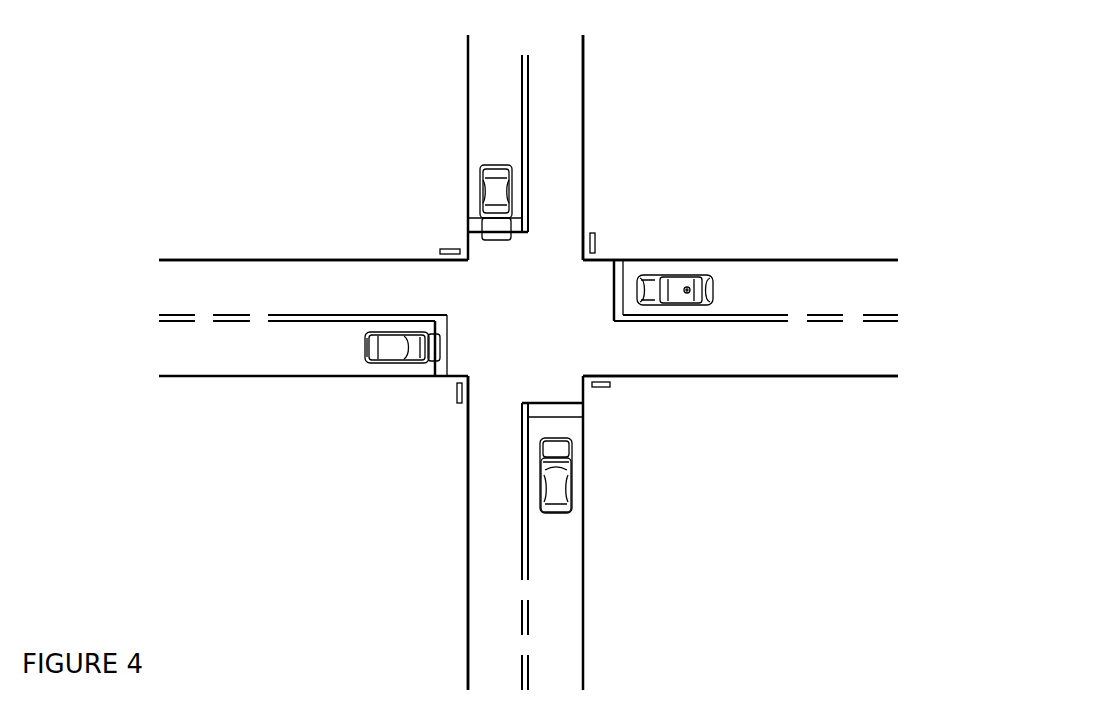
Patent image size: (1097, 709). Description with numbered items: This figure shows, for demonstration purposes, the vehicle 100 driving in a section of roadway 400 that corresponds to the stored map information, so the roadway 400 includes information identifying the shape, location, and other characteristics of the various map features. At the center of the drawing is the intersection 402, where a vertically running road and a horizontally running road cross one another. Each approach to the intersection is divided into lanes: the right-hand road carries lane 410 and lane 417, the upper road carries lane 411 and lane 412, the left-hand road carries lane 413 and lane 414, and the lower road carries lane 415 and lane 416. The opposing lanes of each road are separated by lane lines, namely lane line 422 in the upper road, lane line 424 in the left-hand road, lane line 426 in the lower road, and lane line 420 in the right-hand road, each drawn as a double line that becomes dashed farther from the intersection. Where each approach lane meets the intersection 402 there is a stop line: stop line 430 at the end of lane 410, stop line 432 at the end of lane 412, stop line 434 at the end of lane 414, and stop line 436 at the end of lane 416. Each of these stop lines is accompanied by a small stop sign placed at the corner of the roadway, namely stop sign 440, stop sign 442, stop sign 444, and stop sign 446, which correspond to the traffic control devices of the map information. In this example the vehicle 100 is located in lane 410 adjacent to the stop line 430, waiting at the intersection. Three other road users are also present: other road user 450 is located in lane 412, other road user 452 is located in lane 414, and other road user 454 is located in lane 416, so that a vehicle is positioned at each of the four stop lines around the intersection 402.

The roadway 400 is at (101, 628).
The intersection 402 is at (534, 313).
The lane 410 is at (740, 277).
The lane 411 is at (562, 147).
The lane 413 is at (313, 277).
The lane 415 is at (490, 533).
The lane 417 is at (740, 360).
The lane 412 is at (504, 143).
The lane 414 is at (303, 337).
The lane 416 is at (543, 546).
The lane line 420 is at (748, 312).
The lane line 422 is at (522, 118).
The lane line 424 is at (310, 322).
The lane line 426 is at (530, 533).
The stop line 430 is at (617, 255).
The stop line 432 is at (468, 228).
The stop line 434 is at (440, 378).
The stop line 436 is at (553, 418).
The stop sign 440 is at (593, 232).
The stop sign 442 is at (440, 251).
The stop sign 444 is at (460, 405).
The stop sign 446 is at (610, 385).
The other road user 450 is at (482, 203).
The other road user 452 is at (368, 348).
The other road user 454 is at (570, 480).
The vehicle 100 is at (713, 289).